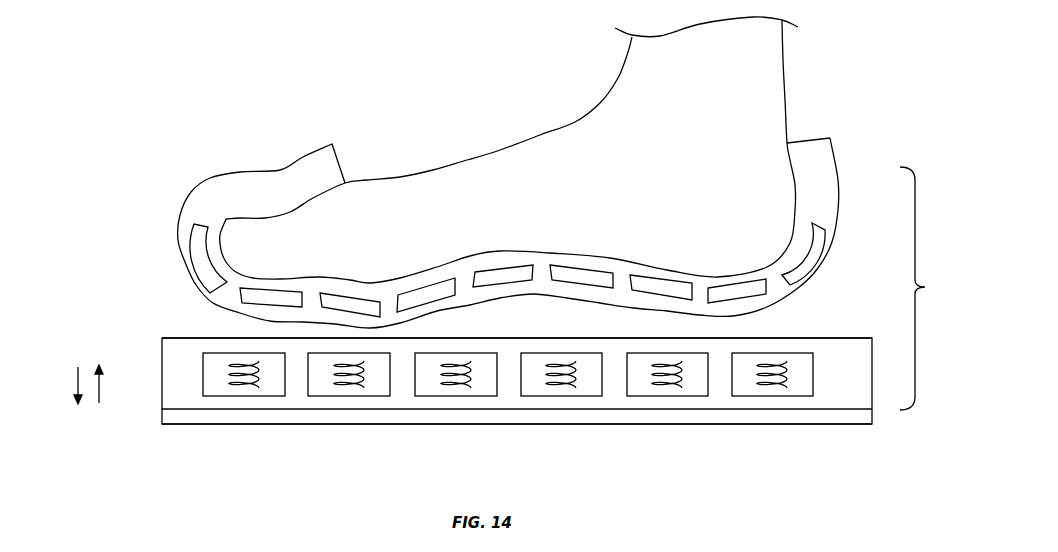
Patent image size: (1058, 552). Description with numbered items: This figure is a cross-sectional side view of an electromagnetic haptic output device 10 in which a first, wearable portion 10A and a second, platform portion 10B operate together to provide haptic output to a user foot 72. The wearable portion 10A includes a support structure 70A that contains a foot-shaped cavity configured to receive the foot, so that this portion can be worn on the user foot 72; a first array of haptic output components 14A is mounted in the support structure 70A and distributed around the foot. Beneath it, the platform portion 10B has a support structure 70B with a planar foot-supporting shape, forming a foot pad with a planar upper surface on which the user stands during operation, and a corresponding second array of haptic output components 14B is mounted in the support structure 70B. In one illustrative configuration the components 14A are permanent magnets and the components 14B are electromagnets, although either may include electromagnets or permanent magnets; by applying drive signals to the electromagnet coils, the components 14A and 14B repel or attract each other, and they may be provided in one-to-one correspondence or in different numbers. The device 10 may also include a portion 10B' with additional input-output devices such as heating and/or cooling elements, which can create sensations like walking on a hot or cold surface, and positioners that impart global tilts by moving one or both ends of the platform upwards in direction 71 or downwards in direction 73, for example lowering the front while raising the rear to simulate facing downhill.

The device 10 is at (924, 288).
The wearable portion 10A is at (843, 262).
The platform portion 10B is at (521, 361).
The portion 10B' is at (517, 444).
The haptic output components 14A is at (254, 286).
The haptic output components 14B is at (322, 397).
The support structure 70A is at (178, 235).
The support structure 70B is at (162, 355).
The direction 71 is at (73, 382).
The user foot 72 is at (773, 82).
The direction 73 is at (102, 391).